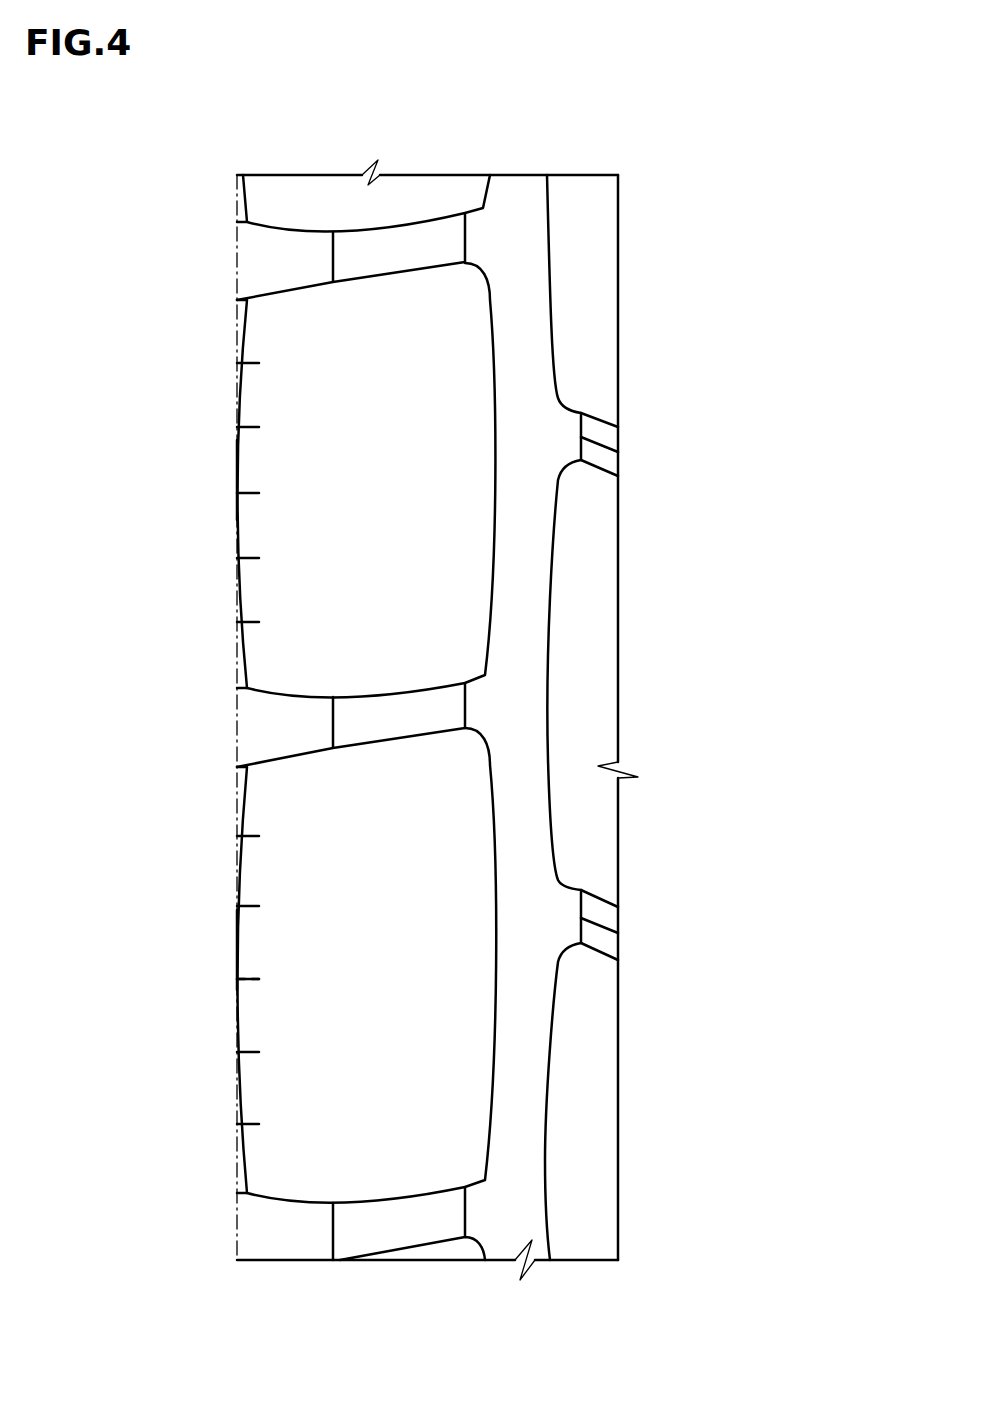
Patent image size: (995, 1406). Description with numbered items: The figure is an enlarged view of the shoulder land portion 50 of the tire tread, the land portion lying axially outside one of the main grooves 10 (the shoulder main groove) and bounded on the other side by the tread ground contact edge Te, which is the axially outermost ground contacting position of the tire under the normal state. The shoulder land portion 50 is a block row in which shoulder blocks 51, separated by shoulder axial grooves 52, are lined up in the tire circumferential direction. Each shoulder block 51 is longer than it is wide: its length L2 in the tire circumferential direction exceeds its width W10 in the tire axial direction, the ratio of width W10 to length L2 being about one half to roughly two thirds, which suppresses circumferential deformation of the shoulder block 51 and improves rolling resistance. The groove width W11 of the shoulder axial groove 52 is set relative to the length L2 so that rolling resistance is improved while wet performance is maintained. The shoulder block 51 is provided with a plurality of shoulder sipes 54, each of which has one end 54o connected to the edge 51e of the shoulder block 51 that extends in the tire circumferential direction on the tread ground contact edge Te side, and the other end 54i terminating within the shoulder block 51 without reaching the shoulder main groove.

The main groove 10 is at (515, 215).
The tread ground contact edge Te is at (234, 258).
The shoulder land portion 50 is at (332, 205).
The shoulder block 51 is at (410, 545).
The edge of the shoulder block 51e is at (237, 472).
The shoulder axial groove 52 is at (355, 260).
The shoulder sipe 54 is at (240, 418).
The one end of the shoulder sipe 54o is at (237, 979).
The other end of the shoulder sipe 54i is at (258, 982).
The width of the shoulder block W10 is at (497, 480).
The groove width of the shoulder axial groove W11 is at (420, 300).
The length of the shoulder block L2 is at (470, 263).